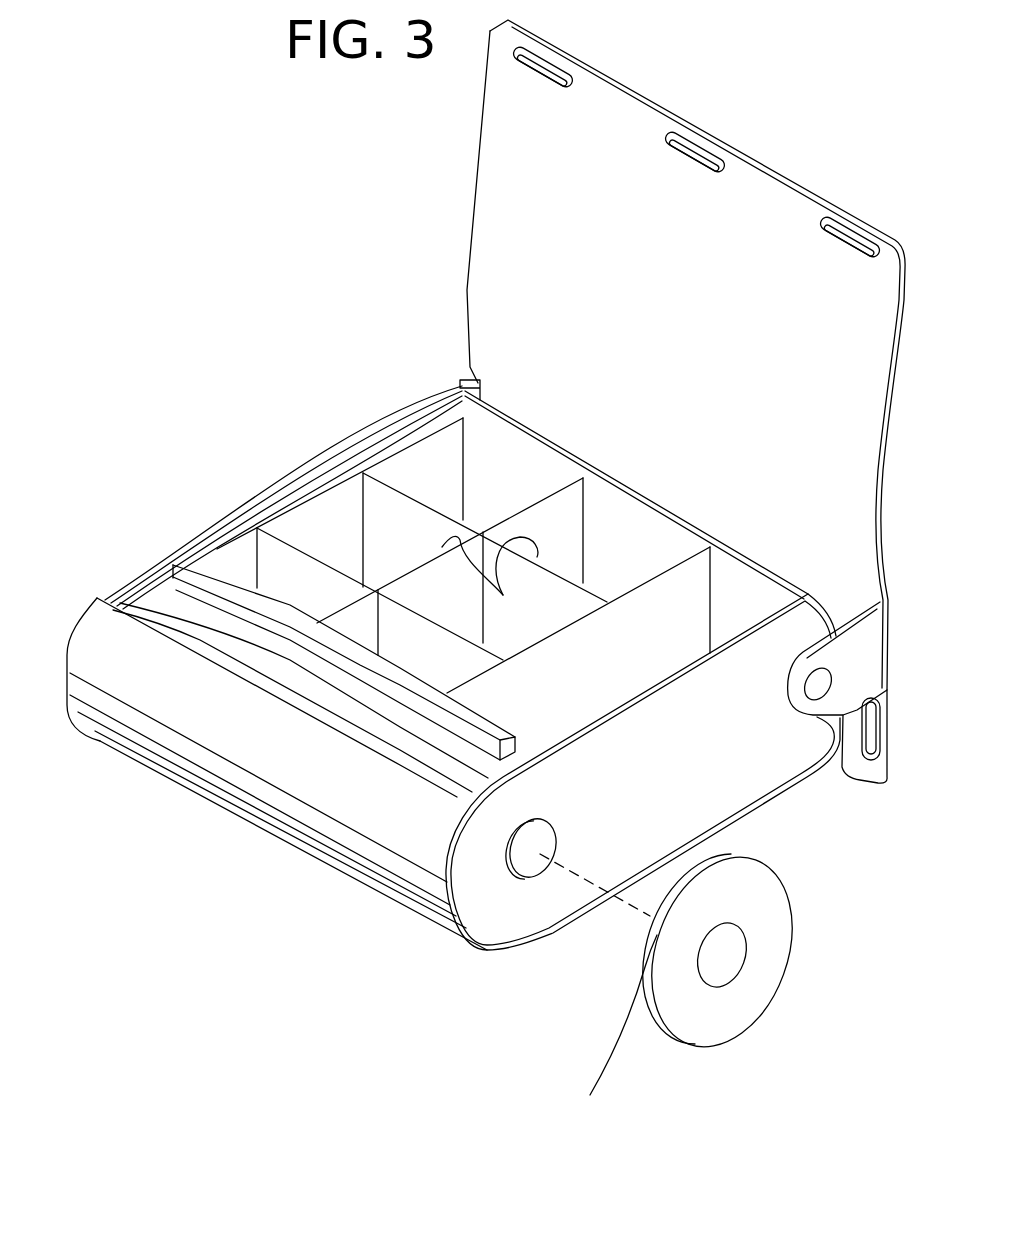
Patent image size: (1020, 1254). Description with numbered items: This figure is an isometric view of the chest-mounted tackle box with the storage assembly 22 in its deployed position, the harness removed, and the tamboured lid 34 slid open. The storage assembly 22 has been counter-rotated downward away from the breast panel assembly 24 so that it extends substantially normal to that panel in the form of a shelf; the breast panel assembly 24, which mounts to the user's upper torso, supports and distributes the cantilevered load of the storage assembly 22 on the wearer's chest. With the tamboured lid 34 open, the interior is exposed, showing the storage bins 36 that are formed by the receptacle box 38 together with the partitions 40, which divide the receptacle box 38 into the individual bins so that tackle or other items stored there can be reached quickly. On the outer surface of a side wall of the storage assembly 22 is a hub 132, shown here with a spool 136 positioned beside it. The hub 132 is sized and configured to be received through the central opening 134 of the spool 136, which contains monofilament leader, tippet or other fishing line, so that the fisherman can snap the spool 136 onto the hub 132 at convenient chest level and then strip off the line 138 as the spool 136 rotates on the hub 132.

The storage assembly 22 is at (746, 808).
The breast panel assembly 24 is at (780, 170).
The tamboured lid 34 is at (180, 594).
The storage bins 36 is at (527, 486).
The receptacle box 38 is at (480, 428).
The partitions 40 is at (491, 574).
The hub 132 is at (512, 872).
The central opening 134 is at (727, 953).
The spool 136 is at (754, 978).
The line 138 is at (612, 1062).